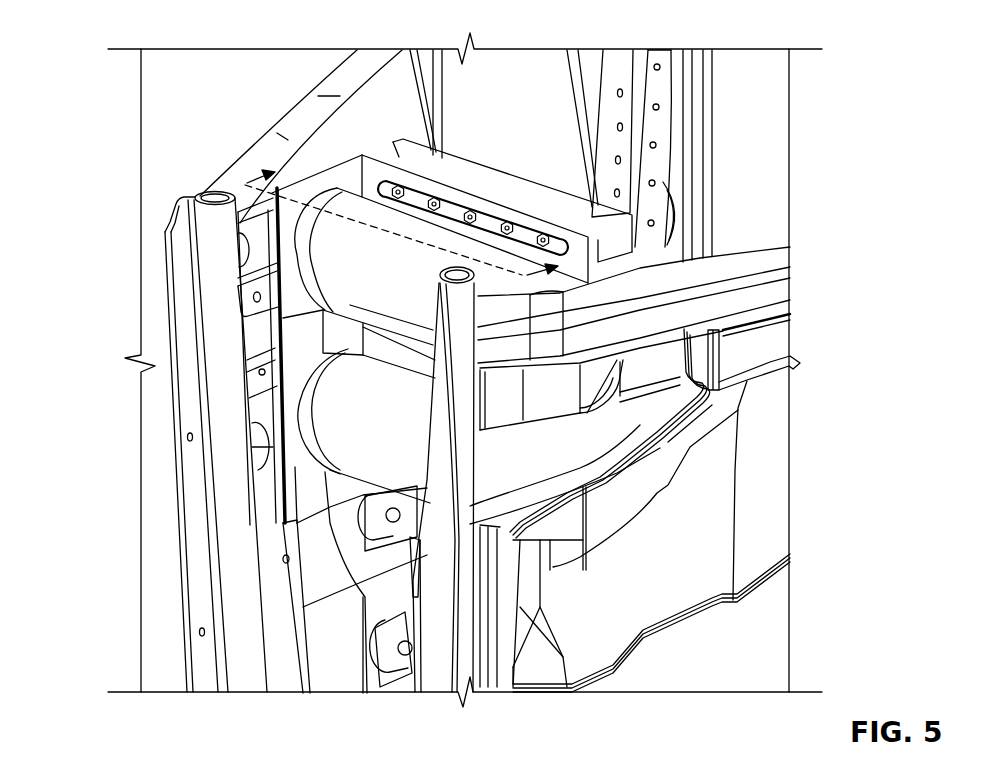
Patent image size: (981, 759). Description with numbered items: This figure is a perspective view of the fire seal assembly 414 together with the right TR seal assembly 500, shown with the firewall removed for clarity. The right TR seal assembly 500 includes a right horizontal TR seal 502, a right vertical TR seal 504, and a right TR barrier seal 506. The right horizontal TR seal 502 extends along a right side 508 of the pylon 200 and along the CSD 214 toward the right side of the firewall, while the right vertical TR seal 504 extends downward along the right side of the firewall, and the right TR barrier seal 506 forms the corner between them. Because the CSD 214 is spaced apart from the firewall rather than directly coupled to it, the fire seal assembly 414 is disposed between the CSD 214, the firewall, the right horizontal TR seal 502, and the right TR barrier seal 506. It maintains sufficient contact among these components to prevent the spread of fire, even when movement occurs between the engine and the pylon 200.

The right TR seal assembly 500 is at (122, 40).
The fire seal assembly 414 is at (318, 128).
The right horizontal TR seal 502 is at (255, 227).
The right vertical TR seal 504 is at (210, 348).
The right TR barrier seal 506 is at (273, 447).
The right side of the pylon 508 is at (393, 108).
The pylon 200 is at (613, 131).
The CSD 214 is at (523, 97).